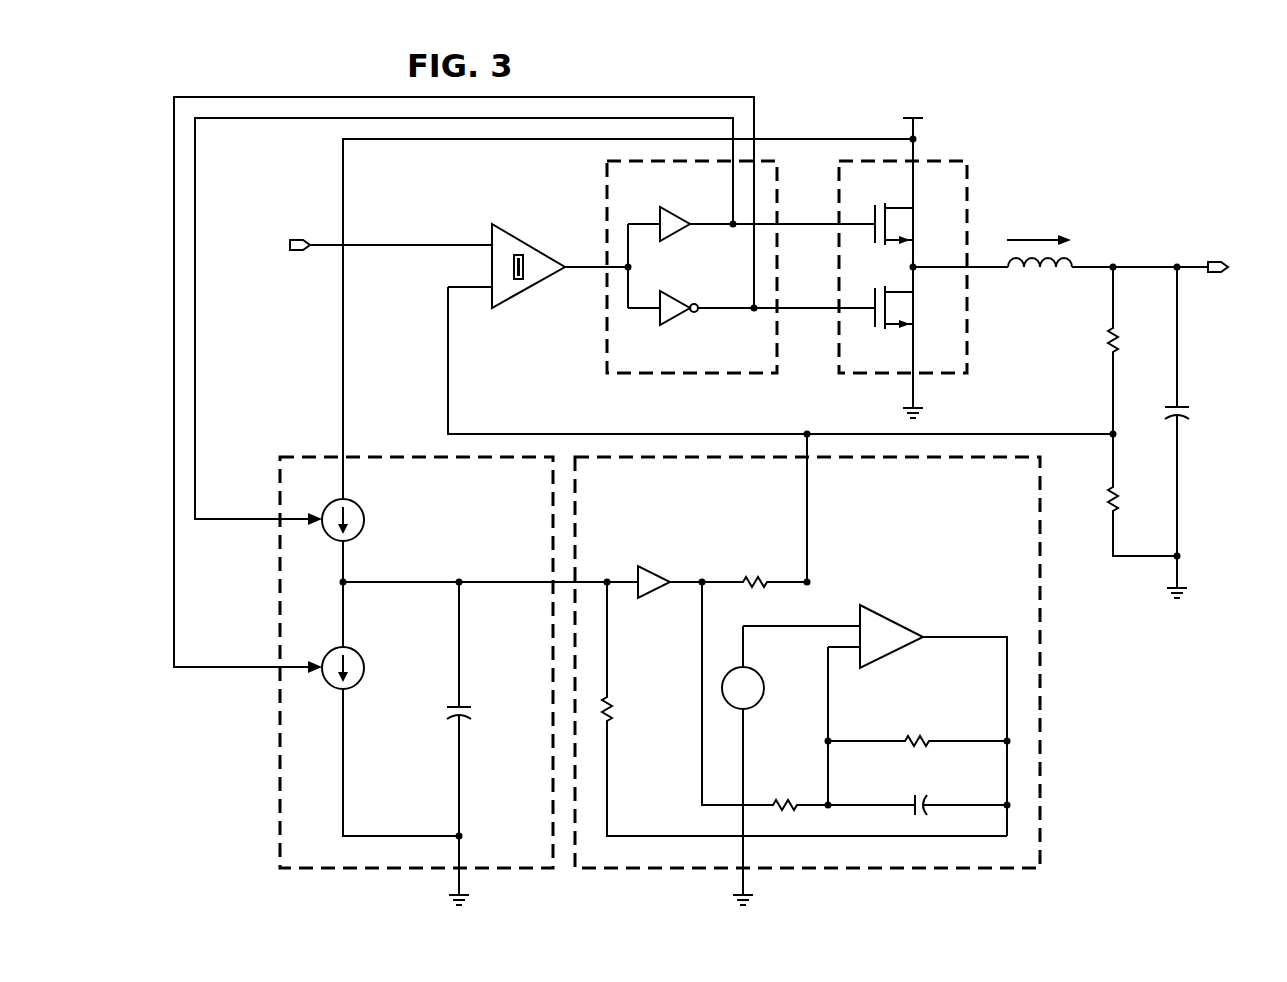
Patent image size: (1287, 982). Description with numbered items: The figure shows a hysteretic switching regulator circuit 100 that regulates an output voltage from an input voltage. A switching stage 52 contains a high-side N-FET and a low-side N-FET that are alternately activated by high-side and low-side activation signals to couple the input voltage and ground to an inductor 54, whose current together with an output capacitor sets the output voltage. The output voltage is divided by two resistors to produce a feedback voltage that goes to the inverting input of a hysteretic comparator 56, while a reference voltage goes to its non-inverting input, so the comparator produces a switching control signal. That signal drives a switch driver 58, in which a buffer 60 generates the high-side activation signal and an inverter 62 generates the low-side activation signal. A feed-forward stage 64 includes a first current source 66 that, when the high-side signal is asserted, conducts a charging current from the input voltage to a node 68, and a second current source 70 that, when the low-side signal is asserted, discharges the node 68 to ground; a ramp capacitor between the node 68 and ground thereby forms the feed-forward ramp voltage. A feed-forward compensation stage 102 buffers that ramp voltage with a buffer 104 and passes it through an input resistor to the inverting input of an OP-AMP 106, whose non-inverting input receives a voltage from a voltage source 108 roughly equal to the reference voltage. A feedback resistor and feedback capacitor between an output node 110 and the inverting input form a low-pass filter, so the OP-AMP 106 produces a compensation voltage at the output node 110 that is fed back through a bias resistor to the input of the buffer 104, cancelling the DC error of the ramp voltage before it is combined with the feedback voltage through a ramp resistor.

The hysteretic switching regulator circuit 100 is at (1119, 128).
The switching stage 52 is at (978, 188).
The inductor 54 is at (1068, 258).
The hysteretic comparator 56 is at (530, 241).
The switch driver 58 is at (592, 186).
The buffer 60 is at (682, 214).
The inverter 62 is at (680, 322).
The feed-forward stage 64 is at (268, 746).
The first current source 66 is at (362, 505).
The node 68 is at (337, 590).
The second current source 70 is at (358, 690).
The feed-forward compensation stage 102 is at (1056, 748).
The buffer 104 is at (654, 570).
The OP-AMP 106 is at (905, 651).
The voltage source 108 is at (753, 710).
The output node 110 is at (1002, 736).